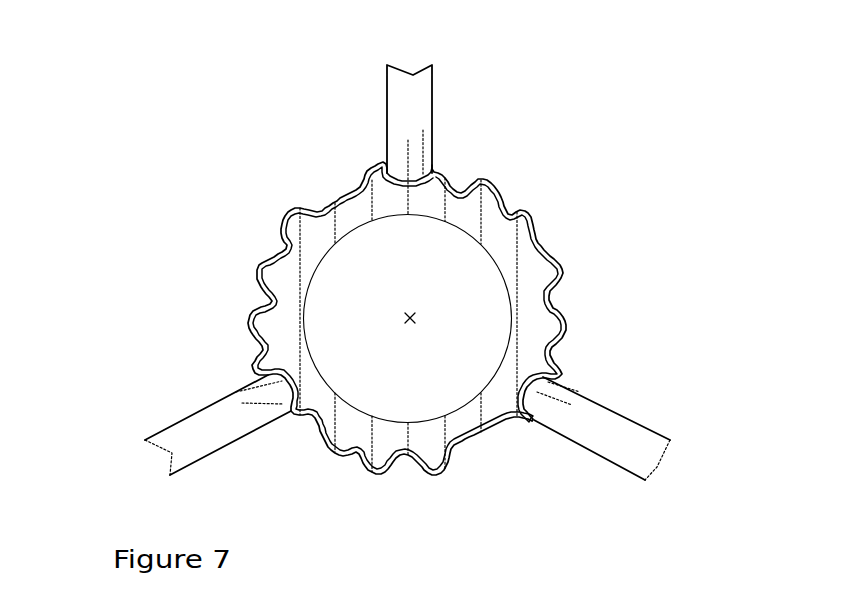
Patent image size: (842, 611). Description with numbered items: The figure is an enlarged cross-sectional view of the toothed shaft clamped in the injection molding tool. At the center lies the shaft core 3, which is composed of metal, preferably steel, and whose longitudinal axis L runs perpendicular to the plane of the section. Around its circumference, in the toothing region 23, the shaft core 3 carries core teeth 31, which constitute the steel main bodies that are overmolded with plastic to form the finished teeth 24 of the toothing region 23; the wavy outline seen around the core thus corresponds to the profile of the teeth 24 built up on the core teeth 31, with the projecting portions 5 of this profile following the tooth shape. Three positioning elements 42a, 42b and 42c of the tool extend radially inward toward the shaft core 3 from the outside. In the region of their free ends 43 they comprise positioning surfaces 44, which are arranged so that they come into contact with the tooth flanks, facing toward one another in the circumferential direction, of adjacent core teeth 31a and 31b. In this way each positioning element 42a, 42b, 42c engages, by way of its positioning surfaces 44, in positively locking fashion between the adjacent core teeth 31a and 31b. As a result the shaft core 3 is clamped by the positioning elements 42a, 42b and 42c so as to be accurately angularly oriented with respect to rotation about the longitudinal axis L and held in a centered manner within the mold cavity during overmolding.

The shaft core 3 is at (353, 213).
The wave crest of profile 5 is at (479, 178).
The toothing region 23 is at (534, 209).
The teeth 24 is at (531, 219).
The core teeth 31 is at (564, 312).
The core tooth 31a is at (447, 165).
The core tooth 31b is at (369, 171).
The positioning element 42a is at (173, 438).
The positioning element 42b is at (418, 92).
The positioning element 42c is at (643, 442).
The free end 43 is at (398, 165).
The positioning surface 44 is at (393, 168).
The longitudinal axis L is at (418, 317).